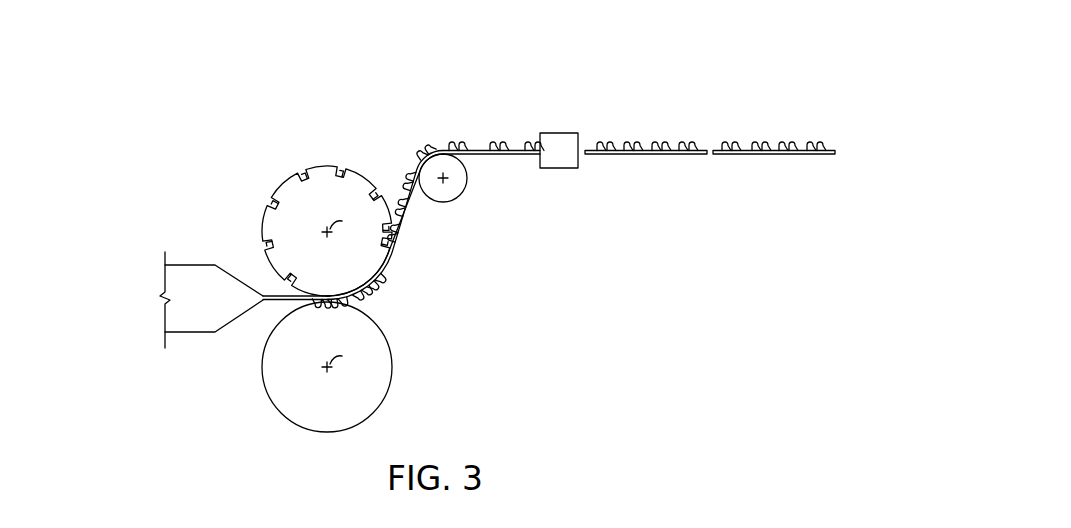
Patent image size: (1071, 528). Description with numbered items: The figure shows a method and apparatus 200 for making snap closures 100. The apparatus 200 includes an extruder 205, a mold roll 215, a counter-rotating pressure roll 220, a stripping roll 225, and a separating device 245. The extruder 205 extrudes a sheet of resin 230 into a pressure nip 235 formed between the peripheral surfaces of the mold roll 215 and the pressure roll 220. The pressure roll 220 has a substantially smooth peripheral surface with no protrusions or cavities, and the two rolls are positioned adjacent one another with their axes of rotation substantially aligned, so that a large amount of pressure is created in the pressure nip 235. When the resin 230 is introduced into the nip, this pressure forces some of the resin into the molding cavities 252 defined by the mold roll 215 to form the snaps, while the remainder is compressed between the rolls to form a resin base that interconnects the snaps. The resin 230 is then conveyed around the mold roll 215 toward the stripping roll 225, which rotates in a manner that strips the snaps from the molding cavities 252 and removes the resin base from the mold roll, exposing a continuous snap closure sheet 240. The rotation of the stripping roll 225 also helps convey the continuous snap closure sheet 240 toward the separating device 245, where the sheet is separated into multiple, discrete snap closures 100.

The snap closures 100 is at (693, 117).
The method and apparatus 200 is at (224, 60).
The extruder 205 is at (197, 272).
The mold roll 215 is at (289, 207).
The pressure roll 220 is at (378, 383).
The stripping roll 225 is at (455, 185).
The sheet of resin 230 is at (263, 301).
The pressure nip 235 is at (362, 298).
The continuous snap closure sheet 240 is at (515, 118).
The separating device 245 is at (565, 162).
The molding cavities 252 is at (267, 212).